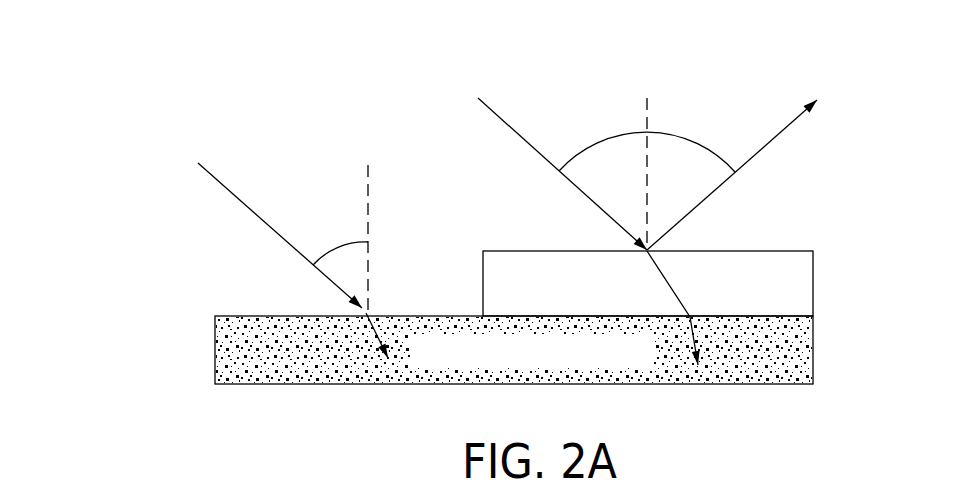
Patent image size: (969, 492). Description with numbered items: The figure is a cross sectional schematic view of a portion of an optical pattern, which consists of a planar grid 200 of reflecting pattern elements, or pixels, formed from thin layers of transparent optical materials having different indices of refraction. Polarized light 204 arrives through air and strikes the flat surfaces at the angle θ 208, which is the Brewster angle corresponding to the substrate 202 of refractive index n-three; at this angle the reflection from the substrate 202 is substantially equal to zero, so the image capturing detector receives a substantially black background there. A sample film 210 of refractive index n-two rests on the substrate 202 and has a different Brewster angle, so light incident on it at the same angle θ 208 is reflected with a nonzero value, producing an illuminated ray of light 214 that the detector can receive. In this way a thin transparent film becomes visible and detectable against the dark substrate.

The planar grid 200 is at (63, 35).
The substrate 202 is at (216, 356).
The polarized light 204 is at (222, 184).
The angle θ 208 is at (338, 248).
The sample film 210 is at (517, 250).
The illuminated ray of light 214 is at (763, 147).